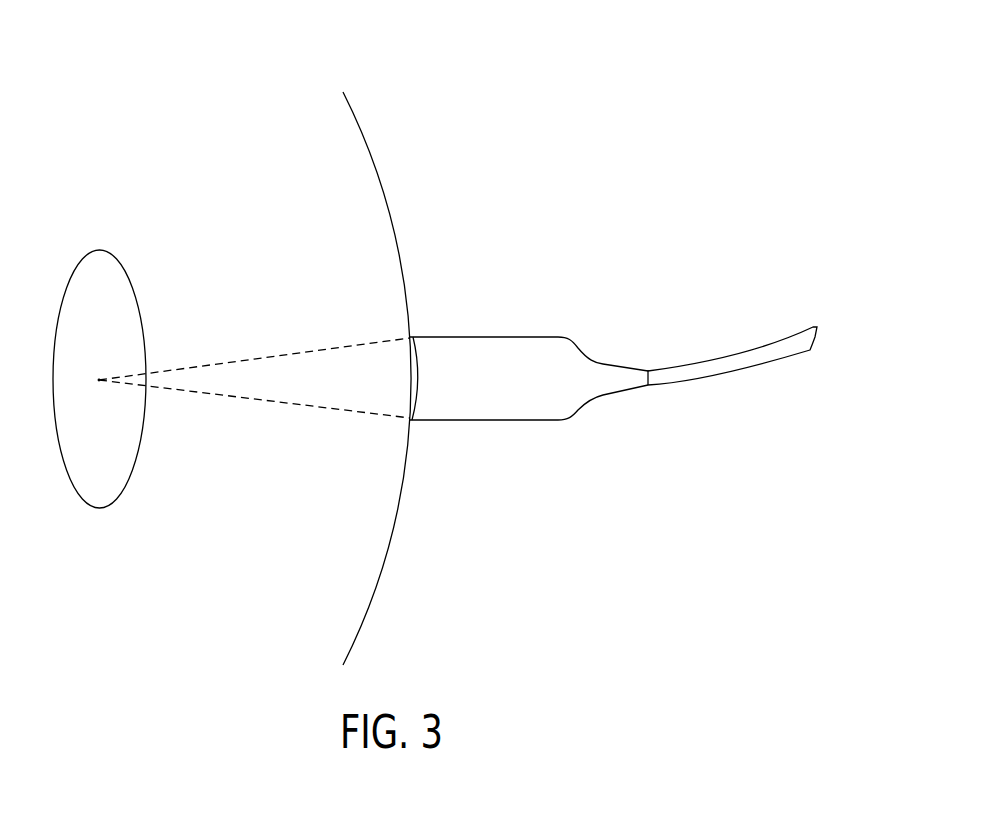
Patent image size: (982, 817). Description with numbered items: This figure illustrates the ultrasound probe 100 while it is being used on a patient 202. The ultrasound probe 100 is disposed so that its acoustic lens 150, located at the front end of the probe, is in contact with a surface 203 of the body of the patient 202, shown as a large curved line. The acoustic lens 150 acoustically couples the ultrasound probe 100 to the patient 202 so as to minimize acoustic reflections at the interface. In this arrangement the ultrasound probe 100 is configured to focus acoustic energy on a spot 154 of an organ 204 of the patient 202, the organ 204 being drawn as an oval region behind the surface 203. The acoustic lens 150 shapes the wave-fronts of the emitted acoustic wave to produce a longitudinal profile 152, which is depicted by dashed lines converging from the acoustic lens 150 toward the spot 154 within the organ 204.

The ultrasound probe 100 is at (592, 308).
The acoustic lens 150 is at (415, 350).
The longitudinal profile 152 is at (277, 402).
The spot 154 is at (99, 382).
The patient 202 is at (304, 95).
The surface 203 is at (392, 555).
The organ 204 is at (98, 250).